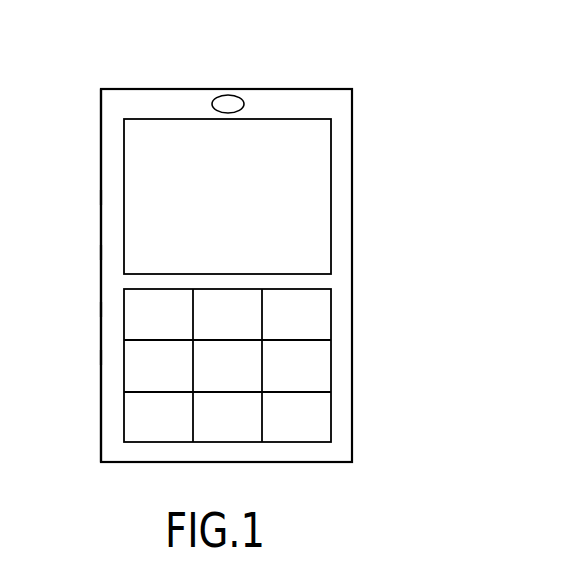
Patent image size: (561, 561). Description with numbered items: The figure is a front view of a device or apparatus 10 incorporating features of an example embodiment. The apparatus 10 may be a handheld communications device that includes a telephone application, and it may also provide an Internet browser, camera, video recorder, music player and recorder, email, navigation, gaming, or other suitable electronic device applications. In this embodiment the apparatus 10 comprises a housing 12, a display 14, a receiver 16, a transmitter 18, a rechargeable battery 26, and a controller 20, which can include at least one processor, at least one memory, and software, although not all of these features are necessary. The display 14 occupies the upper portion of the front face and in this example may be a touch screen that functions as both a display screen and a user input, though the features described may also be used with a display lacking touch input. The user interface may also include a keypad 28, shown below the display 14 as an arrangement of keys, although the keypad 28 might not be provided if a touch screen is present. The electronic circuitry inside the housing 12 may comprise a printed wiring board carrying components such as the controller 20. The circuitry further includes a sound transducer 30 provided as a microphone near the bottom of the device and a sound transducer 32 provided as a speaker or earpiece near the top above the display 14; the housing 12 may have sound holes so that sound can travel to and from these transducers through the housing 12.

The apparatus 10 is at (376, 65).
The housing 12 is at (100, 145).
The display 14 is at (318, 212).
The receiver 16 is at (100, 200).
The transmitter 18 is at (100, 255).
The controller 20 is at (100, 312).
The rechargeable battery 26 is at (100, 360).
The keypad 28 is at (318, 376).
The sound transducer 30 is at (243, 475).
The sound transducer 32 is at (233, 103).